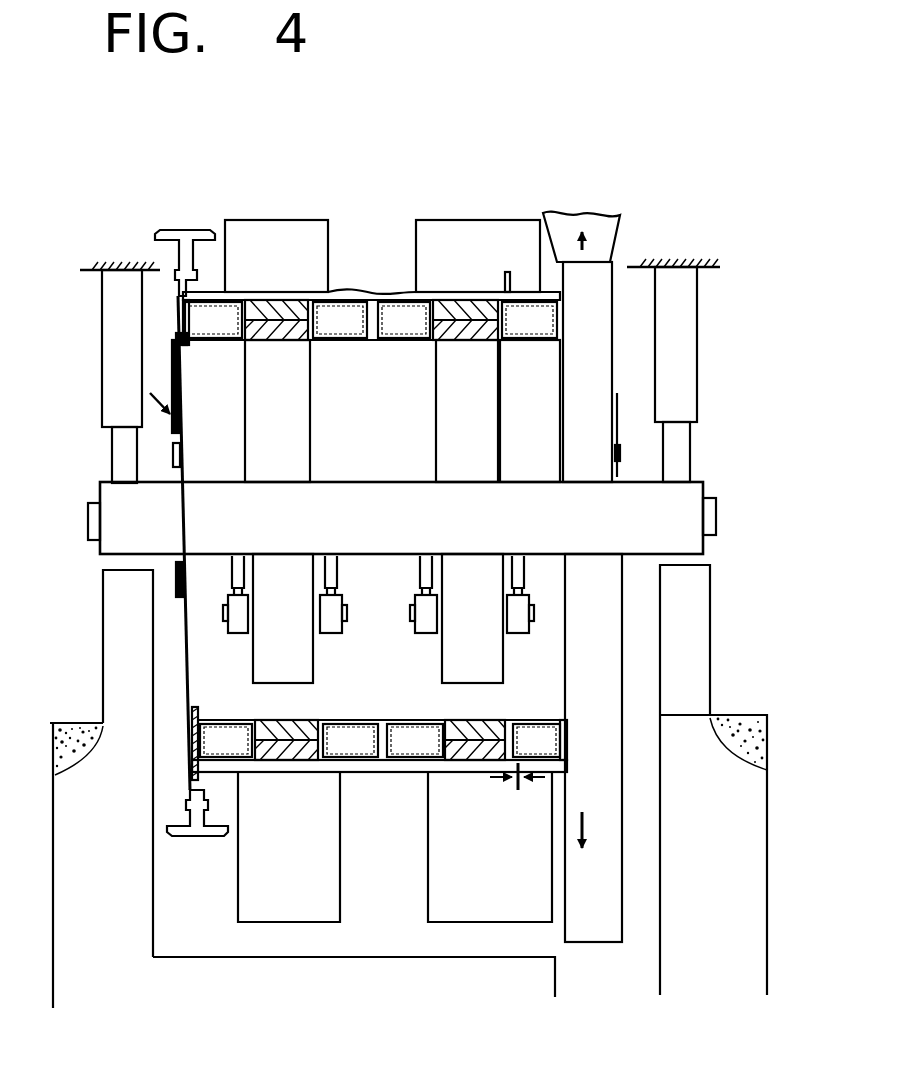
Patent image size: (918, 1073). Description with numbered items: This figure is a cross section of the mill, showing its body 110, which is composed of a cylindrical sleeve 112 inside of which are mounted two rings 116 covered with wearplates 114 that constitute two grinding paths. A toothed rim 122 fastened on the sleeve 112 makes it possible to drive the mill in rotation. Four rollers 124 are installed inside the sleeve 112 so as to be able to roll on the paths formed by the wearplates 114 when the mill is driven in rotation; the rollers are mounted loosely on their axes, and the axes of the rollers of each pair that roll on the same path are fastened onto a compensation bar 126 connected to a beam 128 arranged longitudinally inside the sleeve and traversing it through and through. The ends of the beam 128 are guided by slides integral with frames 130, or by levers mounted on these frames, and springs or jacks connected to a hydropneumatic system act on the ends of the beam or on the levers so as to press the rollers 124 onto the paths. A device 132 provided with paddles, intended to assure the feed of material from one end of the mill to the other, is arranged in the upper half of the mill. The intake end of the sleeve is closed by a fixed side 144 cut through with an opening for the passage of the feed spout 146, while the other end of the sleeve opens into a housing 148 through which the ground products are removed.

The body 110 is at (570, 733).
The cylindrical sleeve 112 is at (465, 772).
The wearplates 114 is at (267, 728).
The rings 116 is at (453, 752).
The toothed rim 122 is at (192, 838).
The rollers 124 is at (442, 663).
The compensation bar 126 is at (223, 612).
The beam 128 is at (118, 545).
The frames 130 is at (132, 613).
The device 132 is at (714, 496).
The fixed side 144 is at (175, 457).
The feed spout 146 is at (197, 435).
The housing 148 is at (617, 393).